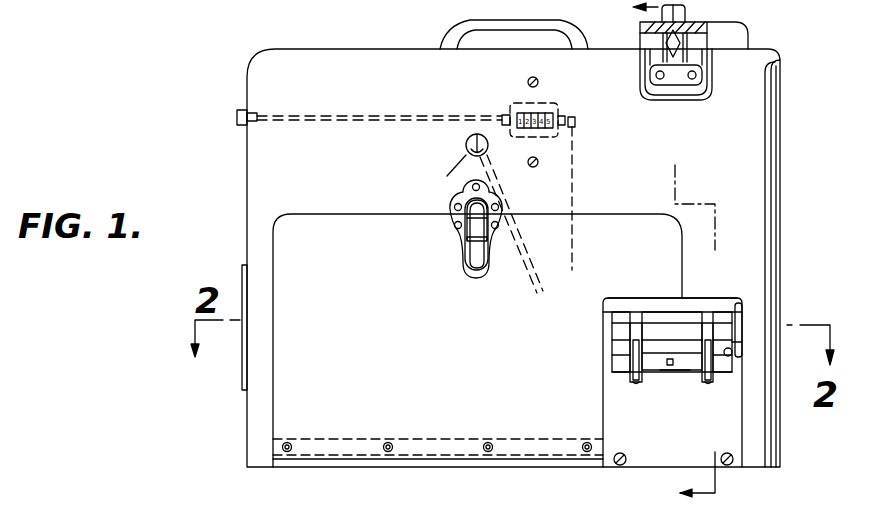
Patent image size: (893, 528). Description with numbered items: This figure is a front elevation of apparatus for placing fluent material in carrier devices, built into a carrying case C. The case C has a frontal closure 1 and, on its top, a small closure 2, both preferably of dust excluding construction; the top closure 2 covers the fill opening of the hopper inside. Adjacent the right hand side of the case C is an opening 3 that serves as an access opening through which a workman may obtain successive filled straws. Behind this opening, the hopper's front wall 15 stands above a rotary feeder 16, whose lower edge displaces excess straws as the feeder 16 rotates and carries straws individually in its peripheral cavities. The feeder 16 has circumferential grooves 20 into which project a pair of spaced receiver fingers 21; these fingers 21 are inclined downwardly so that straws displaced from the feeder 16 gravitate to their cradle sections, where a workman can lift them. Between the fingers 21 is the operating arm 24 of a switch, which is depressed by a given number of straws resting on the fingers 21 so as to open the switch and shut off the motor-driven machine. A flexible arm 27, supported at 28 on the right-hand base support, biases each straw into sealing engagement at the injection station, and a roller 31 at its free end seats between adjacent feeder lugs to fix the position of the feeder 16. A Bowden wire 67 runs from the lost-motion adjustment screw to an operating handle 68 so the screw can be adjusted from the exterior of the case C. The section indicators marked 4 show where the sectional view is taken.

The frontal closure 1 is at (358, 228).
The small closure 2 is at (737, 40).
The opening 3 is at (708, 322).
The section line 4- 4 is at (653, 257).
The carrying case C is at (786, 131).
The front wall 15 is at (687, 303).
The rotary feeder 16 is at (602, 343).
The circumferential grooves 20 is at (638, 322).
The receiver fingers 21 is at (637, 382).
The operating arm 24 is at (670, 366).
The flexible arm 27 is at (742, 341).
The support 28 is at (742, 312).
The roller 31 is at (732, 356).
The Bowden wire 67 is at (527, 265).
The operating handle 68 is at (459, 166).